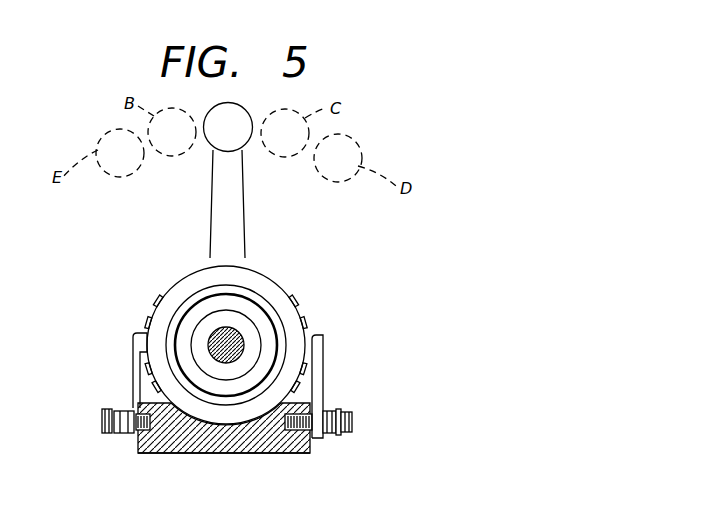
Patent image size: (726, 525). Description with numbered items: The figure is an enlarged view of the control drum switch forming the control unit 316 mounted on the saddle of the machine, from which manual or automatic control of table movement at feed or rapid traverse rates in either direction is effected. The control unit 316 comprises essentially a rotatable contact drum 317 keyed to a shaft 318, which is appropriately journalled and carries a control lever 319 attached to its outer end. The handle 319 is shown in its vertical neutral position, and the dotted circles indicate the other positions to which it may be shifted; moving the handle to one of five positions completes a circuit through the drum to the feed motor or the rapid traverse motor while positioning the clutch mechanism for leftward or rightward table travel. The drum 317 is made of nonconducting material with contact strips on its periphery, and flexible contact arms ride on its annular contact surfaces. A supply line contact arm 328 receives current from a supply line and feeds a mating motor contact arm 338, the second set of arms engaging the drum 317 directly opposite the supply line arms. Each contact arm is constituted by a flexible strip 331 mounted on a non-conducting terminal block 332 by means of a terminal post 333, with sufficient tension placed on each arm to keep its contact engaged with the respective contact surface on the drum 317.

The control unit 316 is at (205, 461).
The contact drum 317 is at (267, 287).
The shaft 318 is at (217, 356).
The control lever 319 is at (232, 112).
The contact arm 328 is at (323, 348).
The flexible strip 331 is at (323, 392).
The terminal block 332 is at (263, 445).
The terminal post 333 is at (352, 422).
The motor contact arm 338 is at (133, 340).